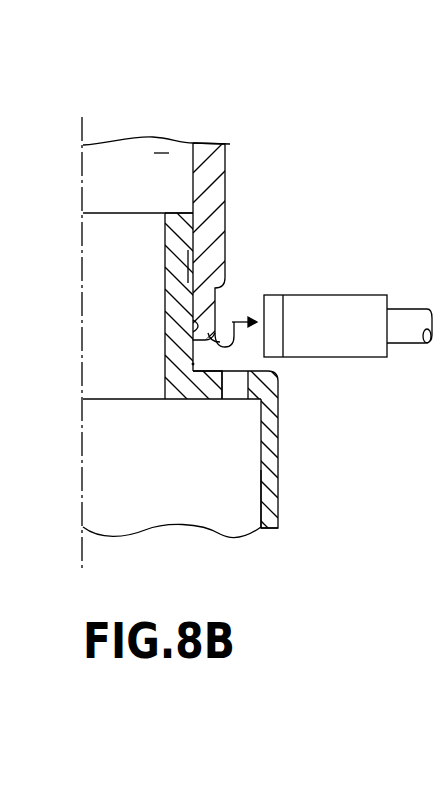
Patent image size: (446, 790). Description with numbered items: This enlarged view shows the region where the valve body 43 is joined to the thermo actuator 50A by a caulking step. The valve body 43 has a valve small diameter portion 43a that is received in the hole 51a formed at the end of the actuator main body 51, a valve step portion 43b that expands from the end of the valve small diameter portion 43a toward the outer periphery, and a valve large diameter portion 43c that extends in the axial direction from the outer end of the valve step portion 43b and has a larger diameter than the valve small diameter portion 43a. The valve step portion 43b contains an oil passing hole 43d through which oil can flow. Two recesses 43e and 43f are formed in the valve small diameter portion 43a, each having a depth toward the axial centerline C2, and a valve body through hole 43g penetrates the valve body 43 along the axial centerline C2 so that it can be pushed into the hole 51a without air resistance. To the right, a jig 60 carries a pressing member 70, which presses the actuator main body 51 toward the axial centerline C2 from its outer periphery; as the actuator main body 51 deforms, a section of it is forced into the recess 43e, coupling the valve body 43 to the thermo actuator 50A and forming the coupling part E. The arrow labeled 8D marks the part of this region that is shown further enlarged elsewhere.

The axial centerline C2 is at (82, 130).
The thermo actuator 50A is at (116, 139).
The actuator main body 51 is at (230, 157).
The hole 51a is at (162, 153).
The valve body 43 is at (278, 470).
The valve small diameter portion 43a is at (217, 230).
The valve step portion 43b is at (187, 400).
The valve large diameter portion 43c is at (260, 498).
The oil passing hole 43d is at (238, 383).
The recess 43e is at (165, 328).
The recess 43f is at (190, 257).
The valve body through hole 43g is at (162, 230).
The coupling part E is at (193, 364).
The part 8D is at (234, 321).
The pressing member 70 is at (348, 355).
The jig 60 is at (325, 339).